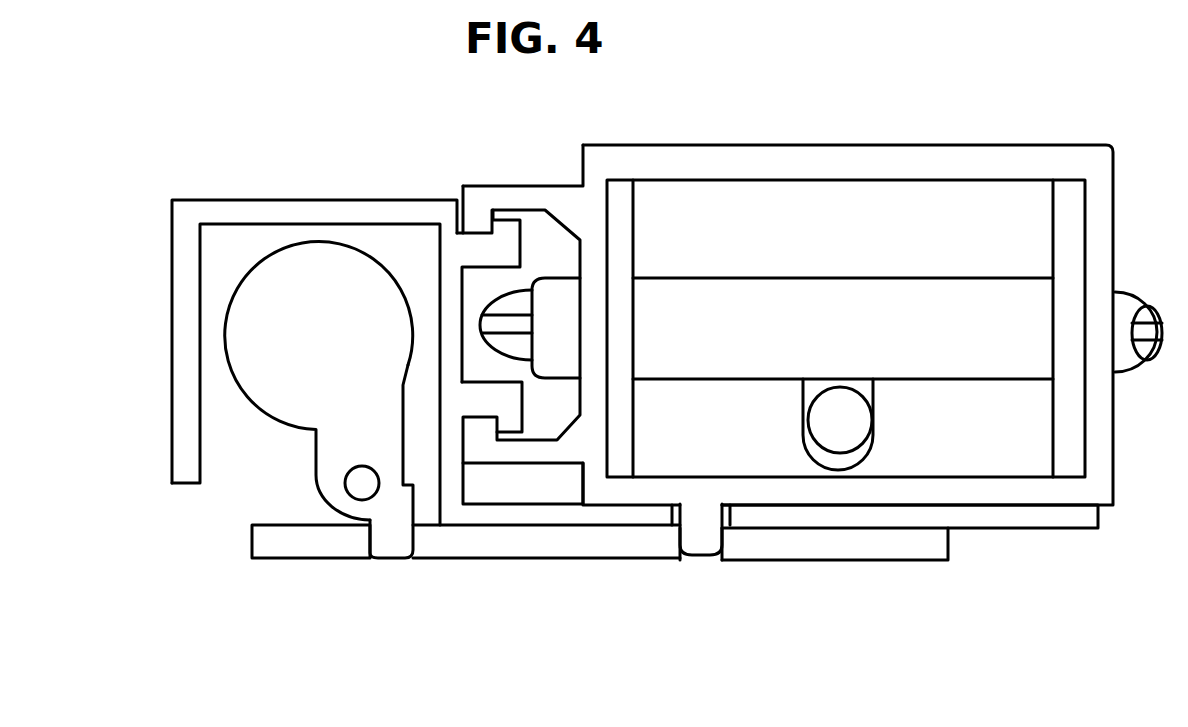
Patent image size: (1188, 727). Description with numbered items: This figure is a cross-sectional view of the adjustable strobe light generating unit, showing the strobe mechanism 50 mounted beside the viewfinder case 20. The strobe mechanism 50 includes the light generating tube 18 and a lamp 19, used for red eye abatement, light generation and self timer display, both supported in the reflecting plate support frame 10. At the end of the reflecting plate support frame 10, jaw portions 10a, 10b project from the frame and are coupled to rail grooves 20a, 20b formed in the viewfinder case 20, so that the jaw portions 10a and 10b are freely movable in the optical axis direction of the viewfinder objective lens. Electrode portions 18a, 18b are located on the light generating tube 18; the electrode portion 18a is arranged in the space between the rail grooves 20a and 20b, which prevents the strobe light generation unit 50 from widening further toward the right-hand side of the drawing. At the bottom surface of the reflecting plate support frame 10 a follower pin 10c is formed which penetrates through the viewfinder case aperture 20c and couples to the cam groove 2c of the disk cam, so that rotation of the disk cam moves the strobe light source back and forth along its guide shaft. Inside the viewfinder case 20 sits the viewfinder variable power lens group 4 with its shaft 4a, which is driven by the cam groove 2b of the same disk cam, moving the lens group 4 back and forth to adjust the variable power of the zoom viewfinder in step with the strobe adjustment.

The viewfinder variable power lens group 4 is at (242, 331).
The shaft of viewfinder variable lens group 4a is at (390, 537).
The cam groove 2b is at (410, 537).
The cam groove 2c is at (680, 537).
The reflecting plate support frame 10 is at (820, 163).
The jaw portion 10a is at (527, 203).
The jaw portion 10b is at (543, 453).
The follower pin 10c is at (703, 533).
The light generating tube 18 is at (894, 346).
The electrode portion 18a is at (520, 323).
The electrode portion 18b is at (1143, 325).
The lamp 19 is at (843, 428).
The viewfinder case 20 is at (323, 214).
The rail groove 20a is at (470, 250).
The rail groove 20b is at (482, 400).
The viewfinder case aperture 20c is at (680, 580).
The strobe mechanism 50 is at (1032, 145).